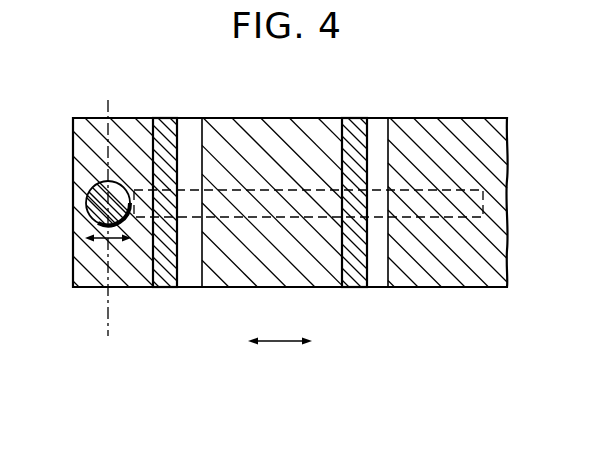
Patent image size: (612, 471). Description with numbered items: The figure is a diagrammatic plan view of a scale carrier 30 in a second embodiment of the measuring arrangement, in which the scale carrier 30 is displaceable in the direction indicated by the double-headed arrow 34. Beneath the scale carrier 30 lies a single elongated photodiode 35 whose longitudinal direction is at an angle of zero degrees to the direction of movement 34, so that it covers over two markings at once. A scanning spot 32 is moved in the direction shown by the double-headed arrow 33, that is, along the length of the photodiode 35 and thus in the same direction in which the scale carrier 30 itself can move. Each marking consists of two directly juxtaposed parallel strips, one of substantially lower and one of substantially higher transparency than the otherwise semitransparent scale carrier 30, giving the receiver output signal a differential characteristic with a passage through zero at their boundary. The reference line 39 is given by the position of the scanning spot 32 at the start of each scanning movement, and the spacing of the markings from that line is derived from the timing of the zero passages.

The scale carrier 30 is at (452, 287).
The scanning spot 32 is at (90, 192).
The double-headed arrow 33 is at (92, 240).
The double-headed arrow 34 is at (278, 342).
The photodiode 35 is at (486, 203).
The reference line 39 is at (106, 312).